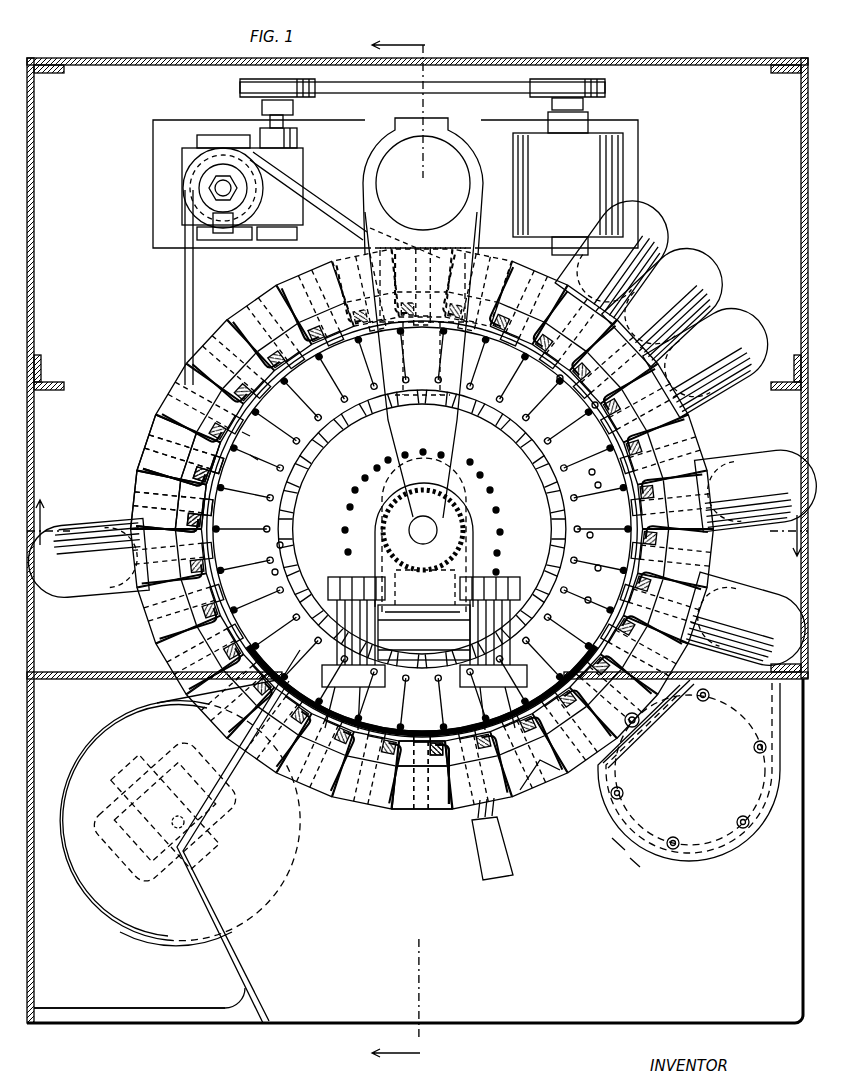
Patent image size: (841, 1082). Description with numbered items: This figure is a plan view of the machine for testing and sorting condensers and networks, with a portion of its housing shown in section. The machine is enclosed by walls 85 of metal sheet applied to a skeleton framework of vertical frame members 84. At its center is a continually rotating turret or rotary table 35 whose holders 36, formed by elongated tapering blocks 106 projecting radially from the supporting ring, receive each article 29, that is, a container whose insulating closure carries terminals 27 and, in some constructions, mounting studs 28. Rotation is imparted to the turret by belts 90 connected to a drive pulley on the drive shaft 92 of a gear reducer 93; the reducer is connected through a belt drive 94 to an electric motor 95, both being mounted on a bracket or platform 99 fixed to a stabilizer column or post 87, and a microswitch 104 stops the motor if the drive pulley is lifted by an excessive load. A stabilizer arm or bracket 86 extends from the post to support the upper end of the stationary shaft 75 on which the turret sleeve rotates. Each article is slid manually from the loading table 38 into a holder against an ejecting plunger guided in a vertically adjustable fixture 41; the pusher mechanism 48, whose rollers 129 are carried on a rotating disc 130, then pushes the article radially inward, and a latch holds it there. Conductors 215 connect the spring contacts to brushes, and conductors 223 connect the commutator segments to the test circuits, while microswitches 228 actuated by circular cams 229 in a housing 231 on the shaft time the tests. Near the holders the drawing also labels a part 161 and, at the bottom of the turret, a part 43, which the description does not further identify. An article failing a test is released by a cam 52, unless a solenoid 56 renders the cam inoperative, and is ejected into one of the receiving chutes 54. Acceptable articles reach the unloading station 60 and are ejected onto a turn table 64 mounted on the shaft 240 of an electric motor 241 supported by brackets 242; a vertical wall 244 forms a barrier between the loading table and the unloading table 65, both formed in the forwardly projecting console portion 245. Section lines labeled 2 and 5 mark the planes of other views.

The walls 85 is at (735, 60).
The vertical frame members 84 is at (787, 70).
The belt drive 94 is at (472, 90).
The bracket or platform 99 is at (490, 128).
The gear reducer 93 is at (302, 160).
The drive shaft 92 is at (238, 190).
The microswitch 104 is at (225, 235).
The belts 90 is at (185, 262).
The stabilizer column or post 87 is at (423, 186).
The stabilizer arm or bracket 86 is at (465, 222).
The electric motor 95 is at (615, 150).
The receiving chutes 54 is at (645, 215).
The article 29 is at (205, 345).
The loading table 38 is at (455, 352).
The vertically adjustable fixture 41 is at (422, 529).
The rotary table or turret 35 is at (170, 422).
The tapering blocks 106 is at (168, 484).
The article holders 36 is at (363, 786).
The contact 161 is at (242, 432).
The cam 52 is at (555, 378).
The solenoid 56 is at (595, 405).
The conductors 215 is at (590, 470).
The stationary shaft 75 is at (425, 492).
The housing 231 is at (385, 548).
The conductors 223 is at (500, 512).
The microswitches 228 is at (370, 572).
The circular cams 229 is at (325, 640).
The section line 5 is at (417, 528).
The section line 2 is at (398, 539).
The unloading station 60 is at (118, 718).
The brackets 242 is at (165, 811).
The electric motor 241 is at (165, 812).
The shaft 240 is at (174, 813).
The turn table 64 is at (142, 928).
The vertical wall 244 is at (205, 940).
The unloading table 65 is at (170, 1010).
The console portion 245 is at (300, 1020).
The terminals 27 is at (500, 805).
The mounting studs 28 is at (505, 817).
The lever 43 is at (540, 800).
The pusher mechanism 48 is at (740, 870).
The pusher rollers 129 is at (688, 769).
The disc 130 is at (619, 855).